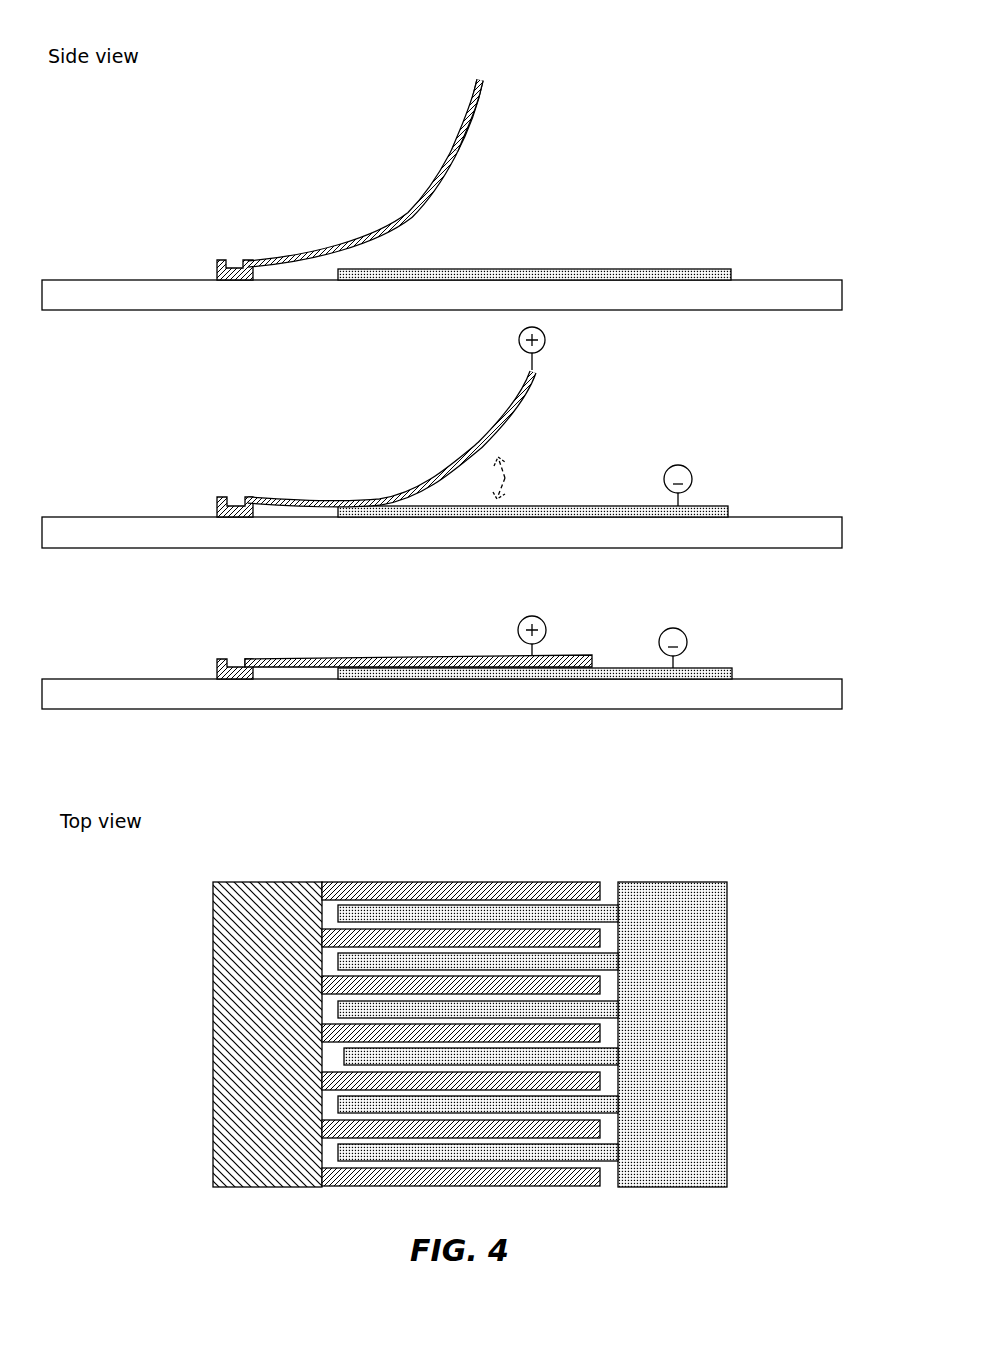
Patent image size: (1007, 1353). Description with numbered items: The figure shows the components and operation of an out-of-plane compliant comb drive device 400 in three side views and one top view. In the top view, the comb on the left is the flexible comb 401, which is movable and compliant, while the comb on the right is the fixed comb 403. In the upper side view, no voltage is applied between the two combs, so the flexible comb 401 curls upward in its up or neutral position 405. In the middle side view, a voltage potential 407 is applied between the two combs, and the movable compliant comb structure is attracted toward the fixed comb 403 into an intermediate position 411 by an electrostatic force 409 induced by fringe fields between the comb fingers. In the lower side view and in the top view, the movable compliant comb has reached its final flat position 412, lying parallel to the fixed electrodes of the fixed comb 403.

The MEMS actuator device 400 is at (752, 126).
The flexible comb 401 is at (430, 192).
The fixed comb 403 is at (583, 267).
The up or neutral position 405 is at (514, 123).
The voltage potential 407 is at (550, 350).
The electrostatic force 409 is at (515, 478).
The intermediate position 411 is at (446, 436).
The final flat position 412 is at (468, 643).